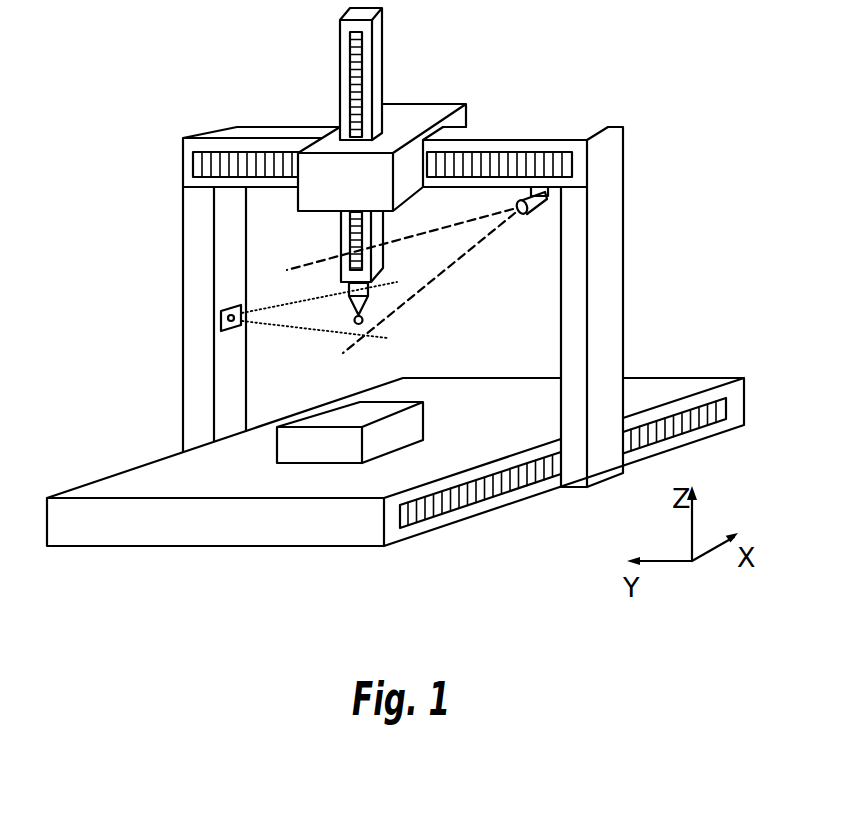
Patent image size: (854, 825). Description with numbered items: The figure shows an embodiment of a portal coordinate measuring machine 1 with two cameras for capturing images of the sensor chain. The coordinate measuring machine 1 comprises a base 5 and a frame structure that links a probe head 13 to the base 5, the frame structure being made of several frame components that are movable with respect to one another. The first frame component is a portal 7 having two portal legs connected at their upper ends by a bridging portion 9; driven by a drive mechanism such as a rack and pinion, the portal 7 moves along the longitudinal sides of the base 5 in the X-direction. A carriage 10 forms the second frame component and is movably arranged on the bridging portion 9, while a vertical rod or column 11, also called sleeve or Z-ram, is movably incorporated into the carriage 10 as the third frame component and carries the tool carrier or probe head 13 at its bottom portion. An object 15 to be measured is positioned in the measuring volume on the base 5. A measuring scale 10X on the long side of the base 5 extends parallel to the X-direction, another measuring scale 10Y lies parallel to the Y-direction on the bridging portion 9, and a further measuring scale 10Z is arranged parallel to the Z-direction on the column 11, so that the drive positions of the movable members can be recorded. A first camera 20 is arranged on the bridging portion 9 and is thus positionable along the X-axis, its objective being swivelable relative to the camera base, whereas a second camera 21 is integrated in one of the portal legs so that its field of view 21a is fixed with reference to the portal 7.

The portal coordinate measuring machine 1 is at (637, 88).
The base 5 is at (673, 383).
The first frame component (portal) 7 is at (605, 358).
The bridging portion 9 is at (268, 135).
The second frame component (carriage) 10 is at (405, 120).
The measuring scale (X) 10X is at (510, 482).
The measuring scale (Y) 10Y is at (217, 165).
The measuring scale (Z) 10Z is at (357, 78).
The vertical rod or column (sleeve, Z-ram) 11 is at (347, 242).
The probe head (tool carrier) 13 is at (366, 293).
The object 15 is at (347, 420).
The first camera 20 is at (537, 205).
The second camera 21 is at (220, 318).
The field of view 21a is at (290, 325).